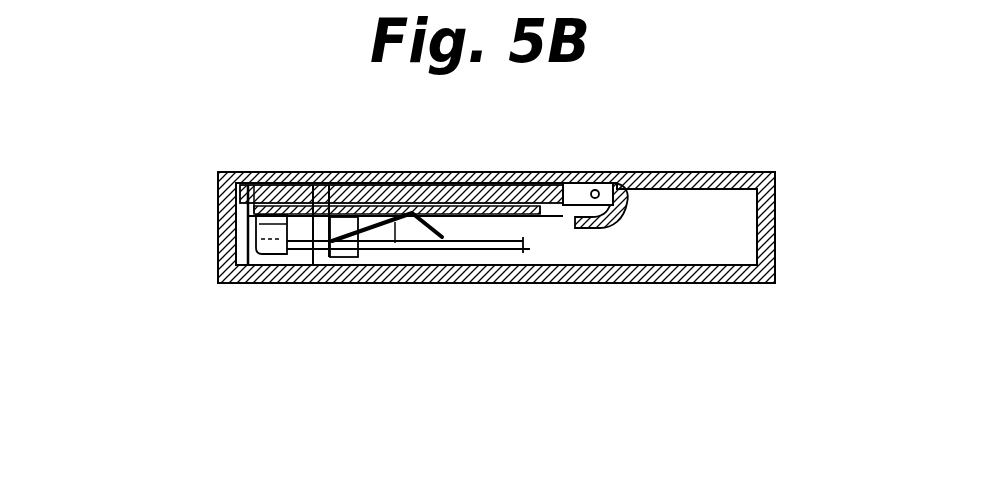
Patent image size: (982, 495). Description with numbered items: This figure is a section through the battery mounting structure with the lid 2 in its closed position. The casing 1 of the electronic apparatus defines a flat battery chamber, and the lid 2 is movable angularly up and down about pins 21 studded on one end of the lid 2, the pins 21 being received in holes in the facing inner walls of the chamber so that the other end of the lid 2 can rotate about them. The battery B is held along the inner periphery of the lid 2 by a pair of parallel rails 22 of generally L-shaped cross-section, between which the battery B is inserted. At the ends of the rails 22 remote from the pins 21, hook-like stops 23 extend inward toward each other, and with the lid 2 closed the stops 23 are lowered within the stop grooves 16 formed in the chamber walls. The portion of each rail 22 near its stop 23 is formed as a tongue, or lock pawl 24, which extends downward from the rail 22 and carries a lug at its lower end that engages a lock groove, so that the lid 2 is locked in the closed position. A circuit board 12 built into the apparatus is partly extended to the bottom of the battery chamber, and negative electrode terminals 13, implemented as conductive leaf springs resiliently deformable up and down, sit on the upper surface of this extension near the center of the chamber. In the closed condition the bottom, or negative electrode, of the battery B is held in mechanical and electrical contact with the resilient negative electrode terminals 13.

The casing 1 is at (275, 284).
The lid 2 is at (420, 172).
The circuit board 12 is at (503, 252).
The negative electrode terminals 13 is at (400, 222).
The stop grooves 16 is at (222, 256).
The pins 21 is at (603, 188).
The rails 22 is at (505, 217).
The stops 23 is at (265, 226).
The lock pawl 24 is at (341, 206).
The battery B is at (507, 183).